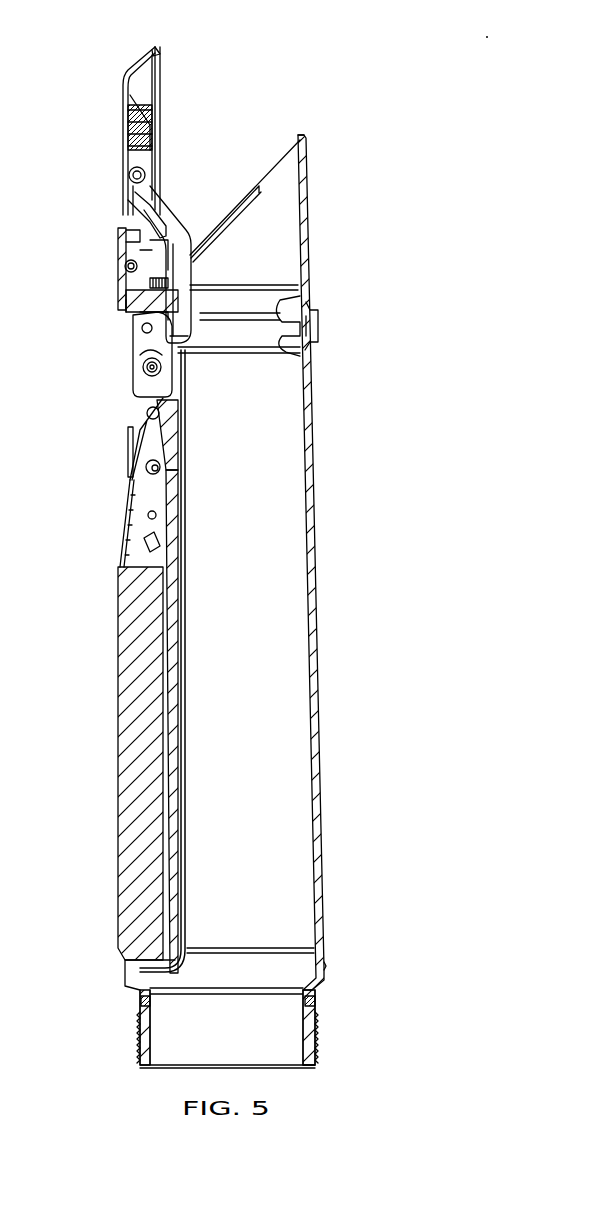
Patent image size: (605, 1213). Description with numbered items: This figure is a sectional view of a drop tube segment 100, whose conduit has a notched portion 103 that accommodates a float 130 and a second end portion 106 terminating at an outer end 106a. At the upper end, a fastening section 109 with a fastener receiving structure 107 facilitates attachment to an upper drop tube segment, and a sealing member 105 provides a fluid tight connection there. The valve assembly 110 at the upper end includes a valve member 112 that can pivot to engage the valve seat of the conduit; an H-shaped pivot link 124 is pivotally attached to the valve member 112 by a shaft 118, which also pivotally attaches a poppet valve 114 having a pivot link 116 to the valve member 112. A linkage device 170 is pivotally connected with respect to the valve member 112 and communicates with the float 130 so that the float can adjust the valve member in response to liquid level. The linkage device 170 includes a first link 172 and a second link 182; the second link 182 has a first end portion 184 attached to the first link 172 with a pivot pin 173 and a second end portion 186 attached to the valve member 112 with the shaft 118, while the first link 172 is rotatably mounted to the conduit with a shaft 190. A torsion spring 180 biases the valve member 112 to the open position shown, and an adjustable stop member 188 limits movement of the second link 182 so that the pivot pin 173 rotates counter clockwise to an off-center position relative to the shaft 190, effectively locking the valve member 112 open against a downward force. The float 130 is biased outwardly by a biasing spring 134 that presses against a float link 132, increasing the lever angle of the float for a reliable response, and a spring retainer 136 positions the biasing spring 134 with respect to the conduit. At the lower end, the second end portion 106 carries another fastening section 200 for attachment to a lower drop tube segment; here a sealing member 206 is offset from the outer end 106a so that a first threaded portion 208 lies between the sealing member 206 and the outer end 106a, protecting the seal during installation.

The drop tube segment 100 is at (233, 562).
The notched portion 103 is at (160, 775).
The sealing member 105 is at (124, 308).
The second end portion 106 is at (211, 1024).
The outer end 106a is at (312, 1068).
The fastener receiving structure 107 is at (325, 327).
The fastening section 109 is at (327, 283).
The valve assembly 110 is at (114, 109).
The valve member 112 is at (157, 48).
The poppet valve 114 is at (120, 155).
The pivot link 116 is at (162, 150).
The shaft 118 is at (147, 175).
The H-shaped pivot link 124 is at (118, 238).
The float 130 is at (118, 740).
The float link 132 is at (128, 457).
The biasing spring 134 is at (143, 472).
The spring retainer 136 is at (142, 414).
The linkage device 170 is at (203, 278).
The first link 172 is at (106, 357).
The pivot pin 173 is at (140, 327).
The torsion spring 180 is at (172, 380).
The second link 182 is at (190, 269).
The first end portion 184 is at (182, 338).
The second end portion 186 is at (130, 190).
The adjustable stop member 188 is at (135, 288).
The shaft 190 is at (148, 370).
The fastening section 200 is at (338, 1003).
The sealing member 206 is at (130, 1001).
The first threaded portion 208 is at (320, 1034).